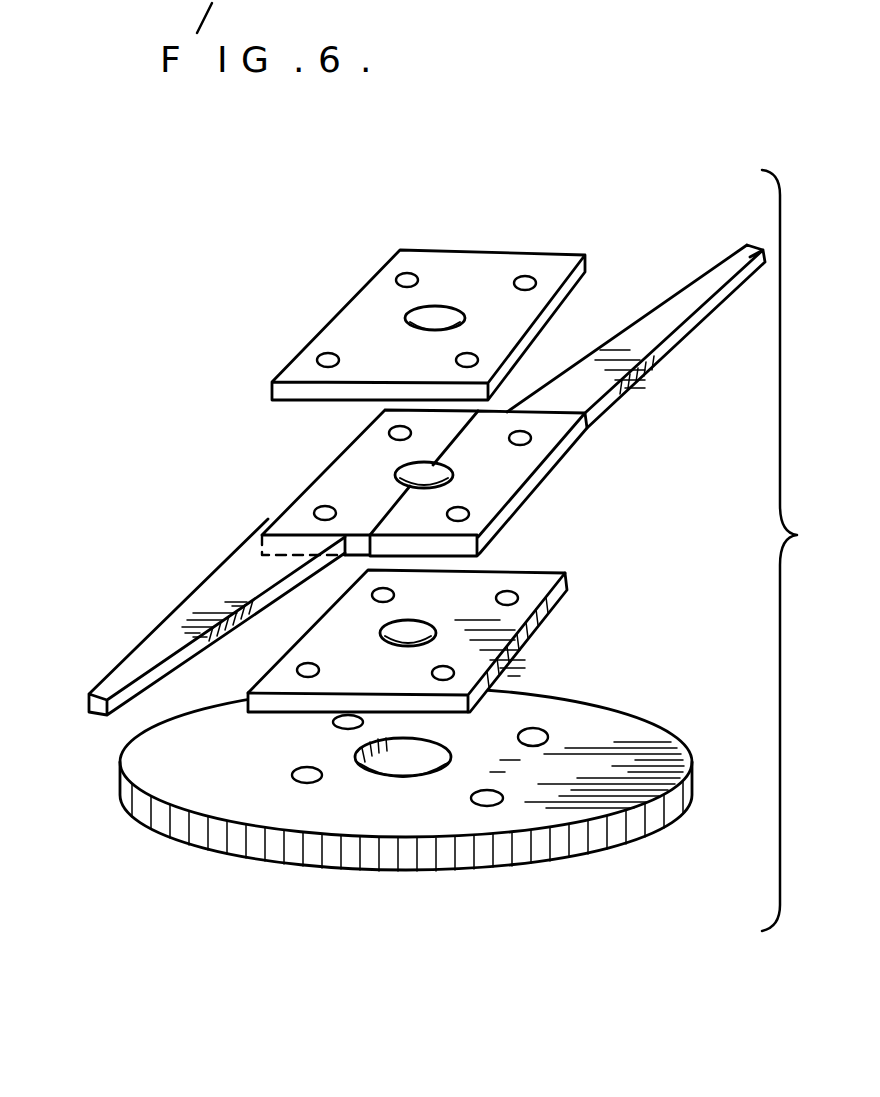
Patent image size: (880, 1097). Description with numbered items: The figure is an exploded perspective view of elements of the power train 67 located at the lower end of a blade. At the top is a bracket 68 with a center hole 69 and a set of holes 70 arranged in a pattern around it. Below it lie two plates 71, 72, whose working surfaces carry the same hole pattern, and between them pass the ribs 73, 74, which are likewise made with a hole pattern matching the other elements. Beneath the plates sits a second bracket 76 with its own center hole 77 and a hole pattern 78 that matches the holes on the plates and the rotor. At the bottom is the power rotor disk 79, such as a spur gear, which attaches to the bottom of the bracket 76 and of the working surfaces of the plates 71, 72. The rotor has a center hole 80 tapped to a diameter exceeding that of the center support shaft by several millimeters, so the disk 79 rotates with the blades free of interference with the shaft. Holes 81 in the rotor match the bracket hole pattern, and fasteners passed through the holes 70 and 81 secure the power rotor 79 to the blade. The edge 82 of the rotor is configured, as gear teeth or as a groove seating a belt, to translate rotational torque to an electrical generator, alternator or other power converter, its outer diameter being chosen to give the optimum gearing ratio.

The power train 67 is at (175, 420).
The bracket 68 is at (518, 258).
The center hole 69 is at (431, 312).
The holes 70 is at (320, 352).
The plate 71 is at (340, 478).
The plate 72 is at (517, 462).
The rib 73 is at (207, 593).
The rib 74 is at (677, 302).
The bracket 76 is at (535, 577).
The center hole 77 is at (388, 628).
The hole pattern 78 is at (512, 598).
The power rotor disk 79 is at (608, 727).
The center hole 80 is at (395, 752).
The holes 81 is at (296, 772).
The edge 82 is at (532, 853).